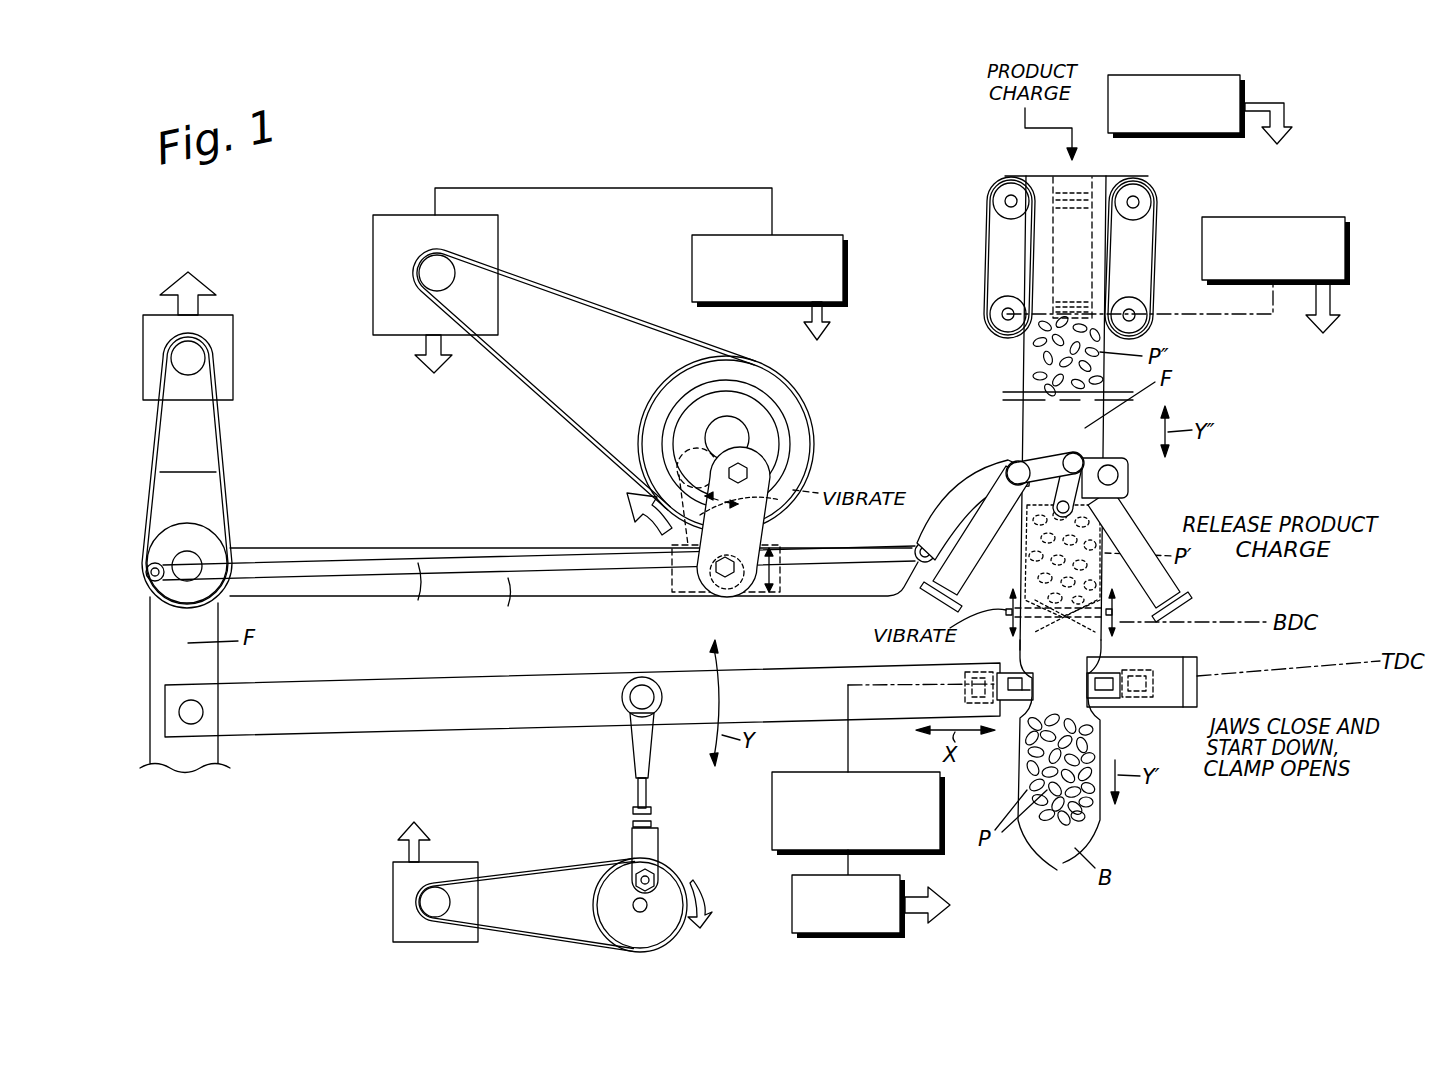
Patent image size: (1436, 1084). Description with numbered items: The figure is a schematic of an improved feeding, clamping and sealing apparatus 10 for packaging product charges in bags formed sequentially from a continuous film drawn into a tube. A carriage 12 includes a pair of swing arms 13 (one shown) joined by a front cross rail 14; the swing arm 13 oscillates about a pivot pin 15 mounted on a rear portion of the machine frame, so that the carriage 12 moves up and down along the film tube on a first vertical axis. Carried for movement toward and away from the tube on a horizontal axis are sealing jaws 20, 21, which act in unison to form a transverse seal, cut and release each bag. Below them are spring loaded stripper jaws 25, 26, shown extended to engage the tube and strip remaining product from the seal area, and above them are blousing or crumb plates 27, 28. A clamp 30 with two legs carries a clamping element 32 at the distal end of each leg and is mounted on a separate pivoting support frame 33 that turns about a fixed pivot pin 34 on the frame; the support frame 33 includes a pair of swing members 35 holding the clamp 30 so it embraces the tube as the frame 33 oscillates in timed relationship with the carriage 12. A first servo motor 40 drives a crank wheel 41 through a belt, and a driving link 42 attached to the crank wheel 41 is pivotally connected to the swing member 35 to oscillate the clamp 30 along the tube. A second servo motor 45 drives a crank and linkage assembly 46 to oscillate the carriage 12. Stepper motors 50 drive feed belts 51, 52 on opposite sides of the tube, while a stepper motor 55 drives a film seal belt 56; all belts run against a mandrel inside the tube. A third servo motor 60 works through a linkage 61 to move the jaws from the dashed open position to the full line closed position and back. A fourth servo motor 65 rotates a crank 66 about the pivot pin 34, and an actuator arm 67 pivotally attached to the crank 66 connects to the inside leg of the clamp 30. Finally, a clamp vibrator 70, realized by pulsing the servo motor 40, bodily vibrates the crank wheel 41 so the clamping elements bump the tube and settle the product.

The feeding, clamping and sealing apparatus 10 is at (904, 258).
The carriage 12 is at (802, 650).
The swing arm 13 is at (798, 695).
The front cross rail 14 is at (1200, 680).
The pivot pin 15 is at (197, 705).
The sealing jaw 20 is at (1005, 663).
The sealing jaw 21 is at (1113, 690).
The stripper jaw 25 is at (1015, 702).
The stripper jaw 26 is at (1100, 698).
The blousing plate 27 is at (1016, 673).
The blousing plate 28 is at (1122, 663).
The clamp 30 is at (1082, 537).
The clamping element 32 is at (1170, 607).
The pivoting support frame 33 is at (506, 512).
The fixed pivot pin 34 is at (190, 558).
The swing member 35 is at (667, 588).
The first servo motor 40 is at (372, 272).
The crank wheel 41 is at (765, 392).
The driving link 42 is at (755, 523).
The second servo motor 45 is at (400, 886).
The crank and linkage assembly 46 is at (648, 853).
The stepper motors 50 is at (1327, 222).
The feed belt 51 is at (1150, 217).
The feed belt 52 is at (988, 244).
The stepper motor 55 is at (1224, 138).
The film seal belt 56 is at (1078, 203).
The third servo motor 60 is at (793, 912).
The linkage 61 is at (785, 822).
The fourth servo motor 65 is at (236, 372).
The crank 66 is at (205, 590).
The actuator arm 67 is at (539, 589).
The clamp vibrator 70 is at (833, 278).